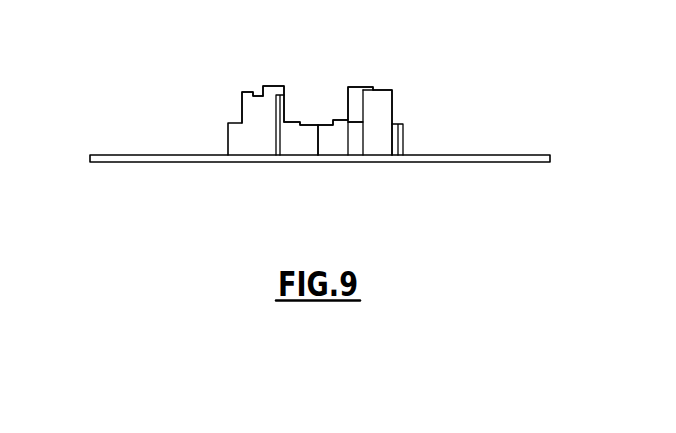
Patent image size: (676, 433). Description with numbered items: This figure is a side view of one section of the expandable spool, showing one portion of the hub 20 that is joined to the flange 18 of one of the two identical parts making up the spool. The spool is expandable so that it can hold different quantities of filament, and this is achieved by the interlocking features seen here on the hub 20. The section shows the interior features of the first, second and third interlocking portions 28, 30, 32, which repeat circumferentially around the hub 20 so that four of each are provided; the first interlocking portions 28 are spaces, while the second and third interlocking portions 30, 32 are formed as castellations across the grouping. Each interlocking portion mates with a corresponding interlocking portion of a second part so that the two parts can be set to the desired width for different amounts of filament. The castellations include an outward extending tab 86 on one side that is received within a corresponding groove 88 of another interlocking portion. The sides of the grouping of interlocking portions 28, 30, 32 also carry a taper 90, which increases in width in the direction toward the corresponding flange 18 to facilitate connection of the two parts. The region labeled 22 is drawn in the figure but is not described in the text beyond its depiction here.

The flange 18 is at (524, 157).
The hub 20 is at (423, 103).
The base portion 22 is at (357, 164).
The first interlocking portion 28 is at (302, 141).
The second interlocking portion 30 is at (340, 132).
The third interlocking portion 32 is at (378, 107).
The outward extending tab 86 is at (340, 106).
The groove 88 is at (224, 112).
The taper 90 is at (210, 131).